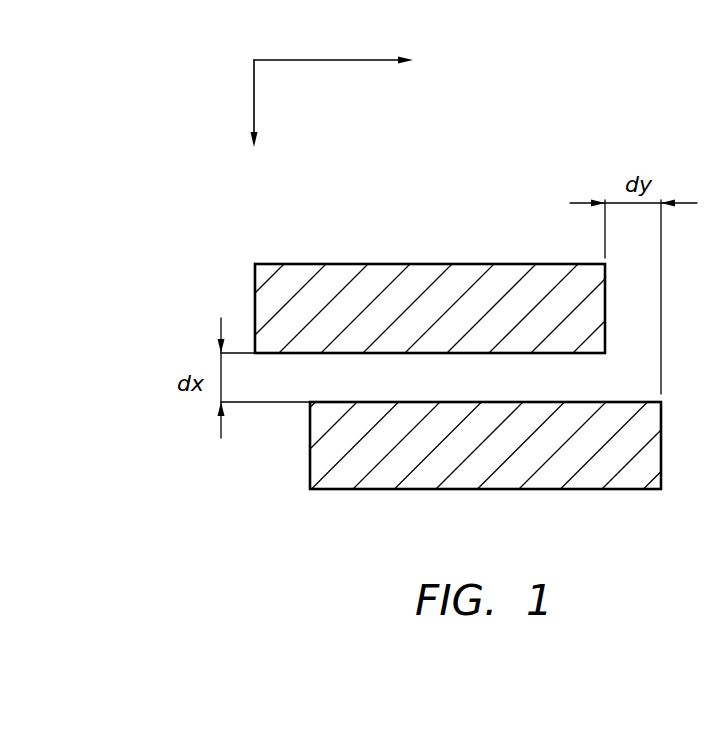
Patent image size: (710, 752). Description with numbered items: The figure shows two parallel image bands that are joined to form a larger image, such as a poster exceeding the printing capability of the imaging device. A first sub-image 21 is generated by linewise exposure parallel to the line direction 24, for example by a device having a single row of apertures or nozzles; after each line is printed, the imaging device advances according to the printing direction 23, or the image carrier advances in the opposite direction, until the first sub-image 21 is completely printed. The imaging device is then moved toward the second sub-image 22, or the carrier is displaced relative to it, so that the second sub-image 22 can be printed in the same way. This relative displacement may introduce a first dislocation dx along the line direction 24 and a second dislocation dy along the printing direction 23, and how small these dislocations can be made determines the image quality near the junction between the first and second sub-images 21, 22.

The first sub-image 21 is at (490, 262).
The second sub-image 22 is at (447, 490).
The printing direction 23 is at (317, 59).
The line direction 24 is at (254, 103).